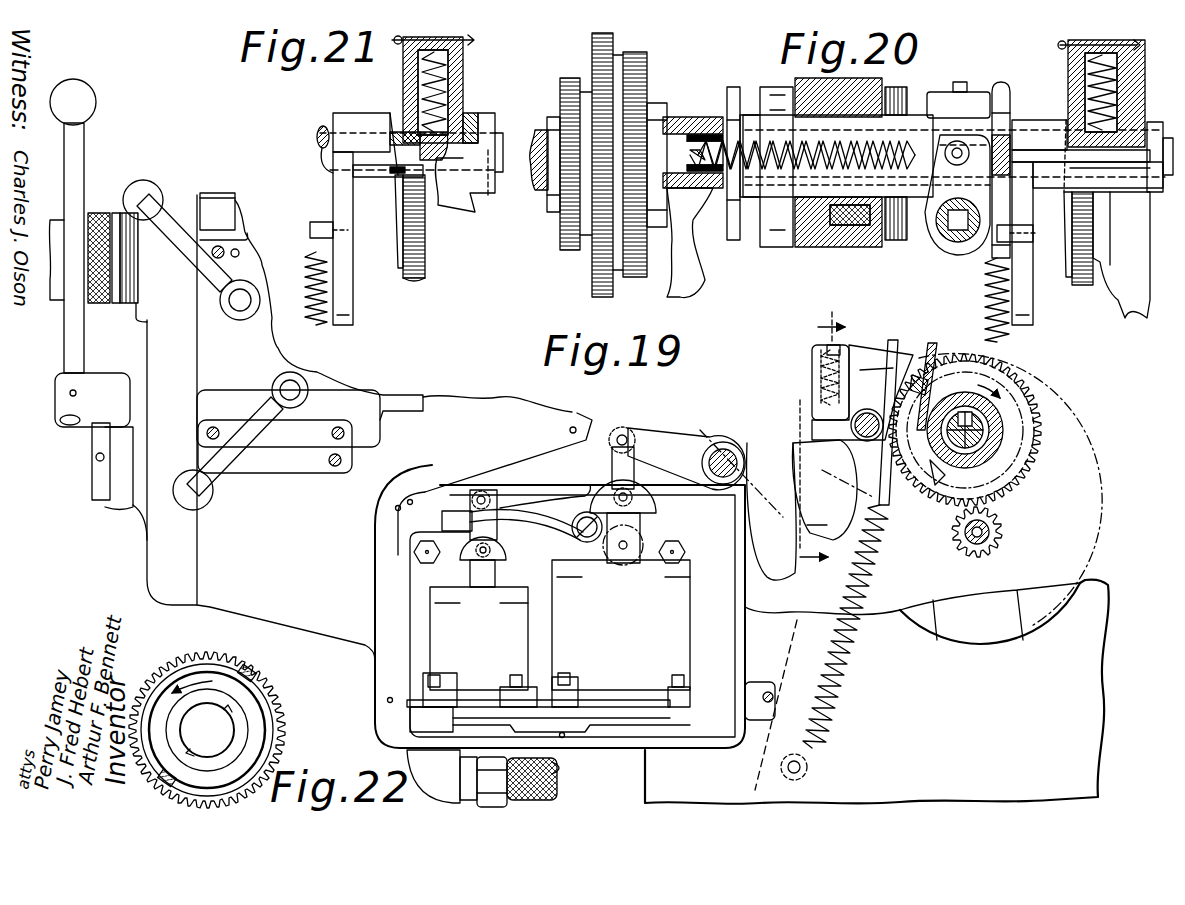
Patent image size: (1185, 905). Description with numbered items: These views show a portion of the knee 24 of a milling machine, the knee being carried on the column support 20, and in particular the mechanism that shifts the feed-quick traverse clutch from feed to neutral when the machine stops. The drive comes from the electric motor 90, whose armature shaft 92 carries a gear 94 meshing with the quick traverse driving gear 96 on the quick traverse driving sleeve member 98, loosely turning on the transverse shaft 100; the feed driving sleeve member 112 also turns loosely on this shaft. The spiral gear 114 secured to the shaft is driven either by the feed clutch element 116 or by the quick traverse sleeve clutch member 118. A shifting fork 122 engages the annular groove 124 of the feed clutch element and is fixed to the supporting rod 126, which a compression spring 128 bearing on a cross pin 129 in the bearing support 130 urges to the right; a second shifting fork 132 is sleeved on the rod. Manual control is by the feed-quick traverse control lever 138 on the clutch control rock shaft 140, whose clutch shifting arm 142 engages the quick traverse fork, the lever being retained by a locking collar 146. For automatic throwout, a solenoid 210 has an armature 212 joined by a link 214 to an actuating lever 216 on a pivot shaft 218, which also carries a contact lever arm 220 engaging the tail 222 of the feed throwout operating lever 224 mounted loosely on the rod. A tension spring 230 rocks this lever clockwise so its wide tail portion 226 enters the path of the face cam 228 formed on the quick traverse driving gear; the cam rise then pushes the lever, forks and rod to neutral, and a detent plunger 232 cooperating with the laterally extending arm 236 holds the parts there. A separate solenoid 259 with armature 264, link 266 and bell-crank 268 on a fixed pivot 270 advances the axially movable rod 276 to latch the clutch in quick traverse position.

In FIG. 19, the column support 20 is at (772, 449).
In FIG. 21, the knee 24 is at (456, 97).
In FIG. 20, the knee 24 is at (1125, 312).
In FIG. 19, the knee 24 is at (598, 493).
In FIG. 19, the electric motor 90 is at (1065, 588).
In FIG. 19, the armature shaft 92 is at (1003, 535).
In FIG. 19, the gear 94 is at (992, 555).
In FIG. 21, the quick traverse driving gear 96 is at (426, 272).
In FIG. 20, the quick traverse driving gear 96 is at (1094, 244).
In FIG. 19, the quick traverse driving gear 96 is at (935, 558).
In FIG. 22, the quick traverse driving gear 96 is at (282, 699).
In FIG. 19, the quick traverse driving sleeve member 98 is at (935, 485).
In FIG. 20, the transverse shaft 100 is at (537, 230).
In FIG. 19, the transverse shaft 100 is at (990, 450).
In FIG. 20, the feed driving sleeve member 112 is at (552, 117).
In FIG. 20, the spiral gear 114 is at (862, 250).
In FIG. 20, the feed clutch element 116 is at (770, 100).
In FIG. 20, the quick traverse sleeve clutch member 118 is at (990, 88).
In FIG. 19, the quick traverse sleeve clutch member 118 is at (1005, 430).
In FIG. 20, the shifting fork 122 is at (760, 235).
In FIG. 20, the annular groove 124 is at (758, 78).
In FIG. 21, the supporting rod 126 is at (316, 138).
In FIG. 20, the supporting rod 126 is at (690, 128).
In FIG. 19, the supporting rod 126 is at (862, 442).
In FIG. 20, the compression spring 128 is at (715, 133).
In FIG. 20, the cross pin 129 is at (660, 235).
In FIG. 20, the bearing support 130 is at (693, 222).
In FIG. 20, the shifting fork 132 is at (903, 127).
In FIG. 19, the feed-quick traverse control lever 138 is at (63, 332).
In FIG. 20, the clutch control rock shaft 140 is at (946, 224).
In FIG. 19, the clutch control rock shaft 140 is at (95, 458).
In FIG. 20, the clutch shifting arm 142 is at (957, 148).
In FIG. 19, the locking collar 146 is at (95, 493).
In FIG. 19, the solenoid 210 is at (621, 633).
In FIG. 19, the armature 212 is at (640, 525).
In FIG. 19, the link 214 is at (612, 465).
In FIG. 19, the actuating lever 216 is at (630, 427).
In FIG. 19, the pivot shaft 218 is at (735, 438).
In FIG. 19, the contact lever arm 220 is at (777, 560).
In FIG. 21, the tail 222 is at (350, 305).
In FIG. 20, the tail 222 is at (1033, 325).
In FIG. 19, the tail 222 is at (878, 510).
In FIG. 21, the feed throwout operating lever 224 is at (345, 176).
In FIG. 20, the feed throwout operating lever 224 is at (1052, 108).
In FIG. 19, the feed throwout operating lever 224 is at (815, 430).
In FIG. 21, the tail portion 226 is at (398, 113).
In FIG. 20, the tail portion 226 is at (1072, 185).
In FIG. 19, the tail portion 226 is at (935, 340).
In FIG. 21, the face cam 228 is at (399, 240).
In FIG. 20, the face cam 228 is at (1068, 75).
In FIG. 19, the face cam 228 is at (1005, 392).
In FIG. 22, the face cam 228 is at (247, 665).
In FIG. 21, the tension spring 230 is at (320, 322).
In FIG. 20, the tension spring 230 is at (990, 262).
In FIG. 19, the tension spring 230 is at (838, 674).
In FIG. 21, the detent plunger 232 is at (456, 200).
In FIG. 20, the detent plunger 232 is at (1115, 88).
In FIG. 19, the detent plunger 232 is at (812, 366).
In FIG. 21, the laterally extending arm 236 is at (406, 160).
In FIG. 20, the laterally extending arm 236 is at (1108, 157).
In FIG. 19, the laterally extending arm 236 is at (884, 374).
In FIG. 19, the solenoid 259 is at (548, 659).
In FIG. 19, the armature 264 is at (472, 563).
In FIG. 19, the link 266 is at (457, 521).
In FIG. 19, the bell-crank 268 is at (556, 512).
In FIG. 19, the fixed pivot 270 is at (573, 538).
In FIG. 19, the axially movable rod 276 is at (583, 496).